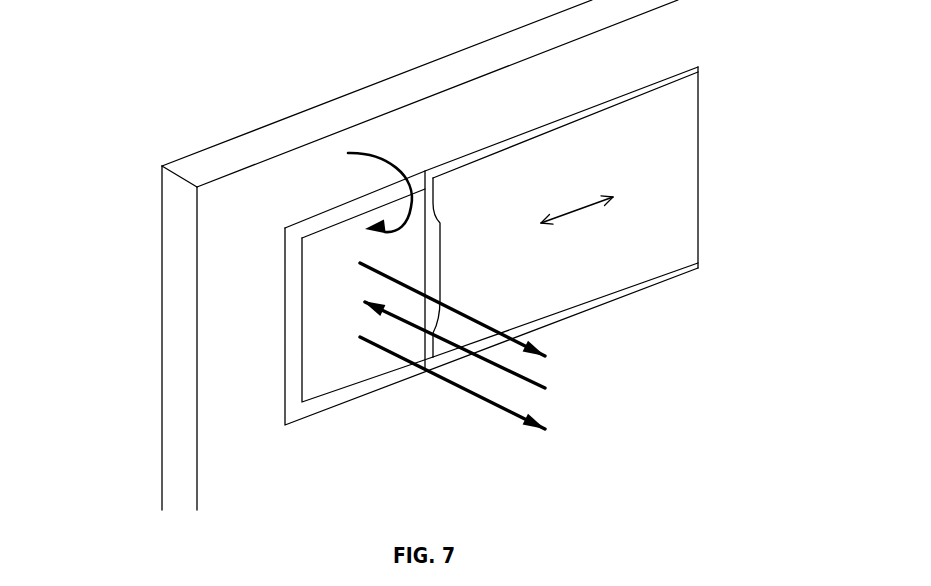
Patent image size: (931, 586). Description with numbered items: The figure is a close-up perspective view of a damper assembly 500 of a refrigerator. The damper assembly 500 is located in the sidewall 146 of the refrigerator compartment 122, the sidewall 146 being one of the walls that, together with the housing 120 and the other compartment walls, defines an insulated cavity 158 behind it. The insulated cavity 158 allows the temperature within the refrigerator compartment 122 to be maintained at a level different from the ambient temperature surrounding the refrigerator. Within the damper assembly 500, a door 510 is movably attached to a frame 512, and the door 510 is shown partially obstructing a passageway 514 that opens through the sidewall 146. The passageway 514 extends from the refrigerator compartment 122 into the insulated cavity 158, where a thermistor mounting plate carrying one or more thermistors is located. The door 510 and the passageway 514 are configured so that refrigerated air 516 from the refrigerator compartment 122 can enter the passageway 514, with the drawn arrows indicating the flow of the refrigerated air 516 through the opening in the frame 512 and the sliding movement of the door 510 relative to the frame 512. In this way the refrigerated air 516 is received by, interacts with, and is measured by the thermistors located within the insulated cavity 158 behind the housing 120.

The damper assembly 500 is at (237, 100).
The housing 120 is at (160, 222).
The insulated cavity 158 is at (177, 327).
The sidewall 146 is at (220, 443).
The frame 512 is at (287, 416).
The door 510 is at (665, 177).
The passageway 514 is at (317, 373).
The refrigerated air 516 is at (549, 387).
The refrigerator compartment 122 is at (695, 437).